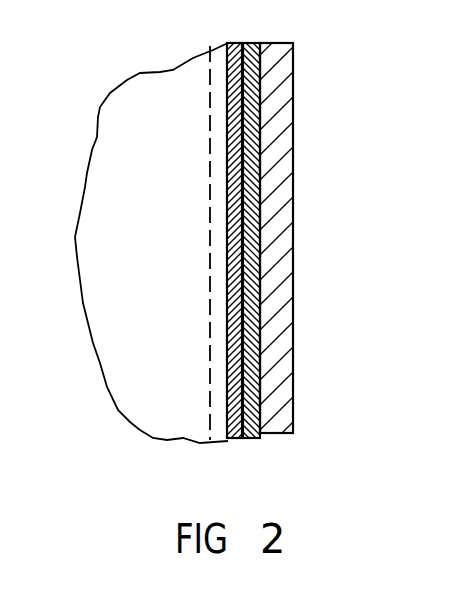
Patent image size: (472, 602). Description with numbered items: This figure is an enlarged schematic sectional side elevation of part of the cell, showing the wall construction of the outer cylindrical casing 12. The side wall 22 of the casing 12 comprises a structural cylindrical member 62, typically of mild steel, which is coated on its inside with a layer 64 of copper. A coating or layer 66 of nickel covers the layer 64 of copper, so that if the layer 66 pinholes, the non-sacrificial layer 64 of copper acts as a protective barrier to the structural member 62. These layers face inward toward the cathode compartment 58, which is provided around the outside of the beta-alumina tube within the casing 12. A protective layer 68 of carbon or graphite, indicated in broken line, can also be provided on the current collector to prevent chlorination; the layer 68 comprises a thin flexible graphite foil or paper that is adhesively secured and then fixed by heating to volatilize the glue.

The outer cylindrical casing 12 is at (243, 254).
The side wall 22 is at (227, 254).
The cathode compartment 58 is at (187, 128).
The structural cylindrical member 62 is at (268, 290).
The layer of copper 64 is at (250, 438).
The layer of nickel 66 is at (229, 263).
The protective layer 68 is at (217, 354).